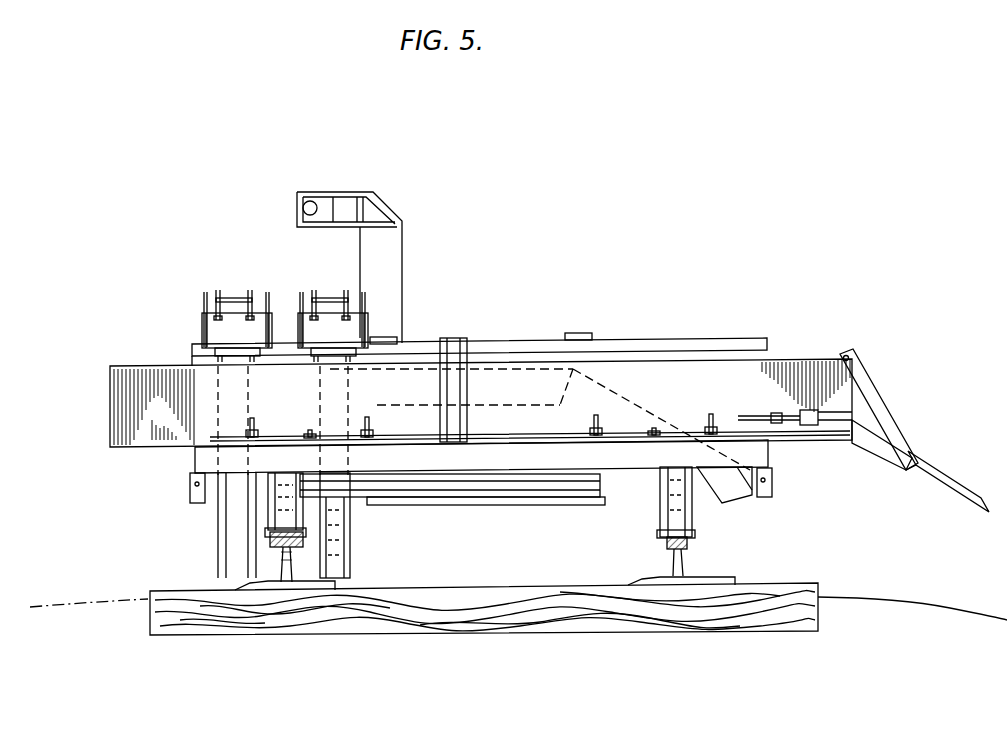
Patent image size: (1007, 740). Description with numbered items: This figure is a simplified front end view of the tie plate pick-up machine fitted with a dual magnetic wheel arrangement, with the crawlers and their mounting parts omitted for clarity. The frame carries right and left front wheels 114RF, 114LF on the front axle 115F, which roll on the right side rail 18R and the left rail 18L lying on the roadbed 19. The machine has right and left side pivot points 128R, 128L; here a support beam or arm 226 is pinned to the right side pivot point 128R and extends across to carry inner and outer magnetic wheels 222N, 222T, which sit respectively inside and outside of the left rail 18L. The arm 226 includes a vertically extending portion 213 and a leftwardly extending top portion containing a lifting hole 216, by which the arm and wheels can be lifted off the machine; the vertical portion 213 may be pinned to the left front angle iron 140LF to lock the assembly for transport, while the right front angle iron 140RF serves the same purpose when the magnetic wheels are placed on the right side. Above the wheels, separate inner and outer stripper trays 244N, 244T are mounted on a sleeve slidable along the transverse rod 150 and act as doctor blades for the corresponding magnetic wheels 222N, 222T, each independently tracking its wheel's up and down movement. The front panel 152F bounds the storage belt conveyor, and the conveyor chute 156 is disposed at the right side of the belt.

The roadbed 19 is at (522, 590).
The left rail 18L is at (300, 566).
The right side rail 18R is at (686, 561).
The transverse rod 150 is at (653, 343).
The left front angle iron 140LF is at (405, 338).
The right front angle iron 140RF is at (578, 333).
The vertically extending portion 213 is at (405, 260).
The lifting hole 216 is at (312, 200).
The outer stripper tray 244T is at (220, 333).
The inner stripper tray 244N is at (312, 330).
The support beam or arm 226 is at (633, 400).
The front panel 152F is at (800, 360).
The conveyor chute 156 is at (940, 465).
The inner magnetic wheel 222N is at (355, 521).
The front axle 115F is at (633, 503).
The left front wheel 114LF is at (300, 530).
The outer magnetic wheel 222T is at (218, 540).
The right front wheel 114RF is at (660, 528).
The left side pivot point 128L is at (195, 484).
The right side pivot point 128R is at (775, 480).